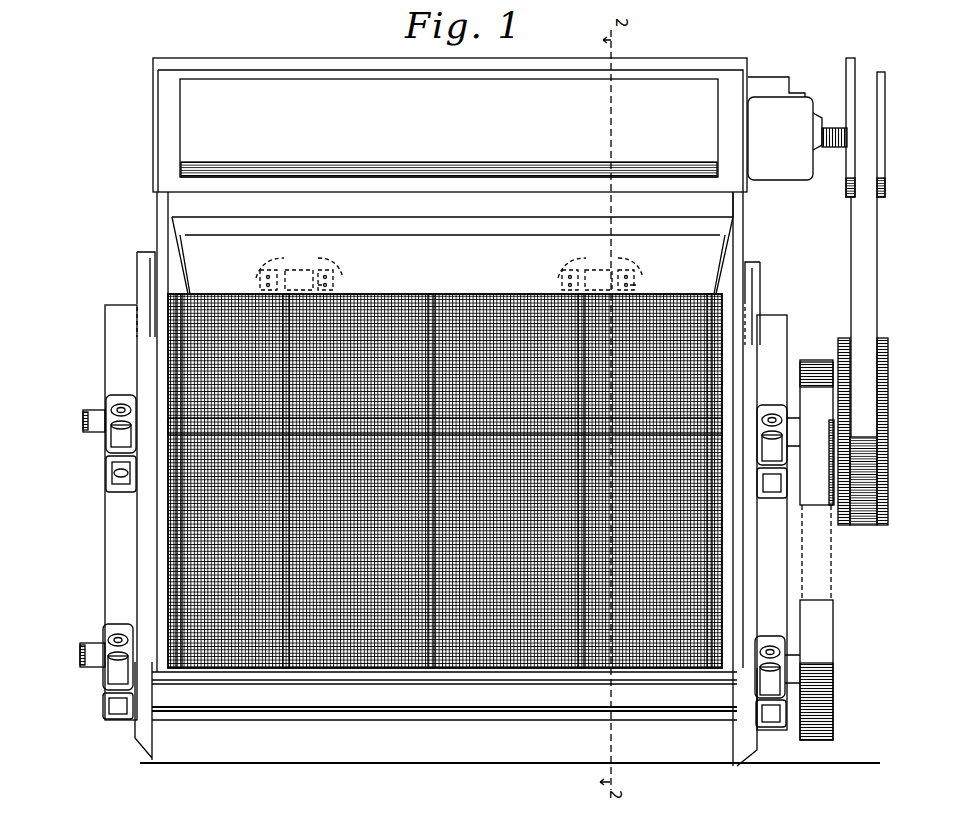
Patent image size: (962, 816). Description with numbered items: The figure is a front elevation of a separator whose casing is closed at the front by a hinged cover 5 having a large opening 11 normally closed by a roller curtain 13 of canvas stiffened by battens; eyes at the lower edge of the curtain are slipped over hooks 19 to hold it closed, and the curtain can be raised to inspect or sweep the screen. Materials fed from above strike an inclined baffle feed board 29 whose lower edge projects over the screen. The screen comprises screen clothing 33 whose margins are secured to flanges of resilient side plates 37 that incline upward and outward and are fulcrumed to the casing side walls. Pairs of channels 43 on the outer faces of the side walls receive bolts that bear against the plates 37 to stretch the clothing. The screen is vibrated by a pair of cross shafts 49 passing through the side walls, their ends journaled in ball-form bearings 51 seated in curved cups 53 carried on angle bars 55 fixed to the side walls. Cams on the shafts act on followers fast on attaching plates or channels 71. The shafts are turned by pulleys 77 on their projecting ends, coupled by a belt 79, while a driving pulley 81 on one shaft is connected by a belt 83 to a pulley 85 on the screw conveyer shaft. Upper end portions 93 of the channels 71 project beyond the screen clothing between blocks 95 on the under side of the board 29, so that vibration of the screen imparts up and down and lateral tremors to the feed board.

The cover 5 is at (191, 58).
The opening 11 is at (449, 128).
The roller curtain 13 is at (268, 172).
The hooks 19 is at (213, 672).
The baffle feed board 29 is at (200, 257).
The screen clothing 33 is at (444, 297).
The side plates 37 is at (192, 299).
The channels 43 is at (148, 286).
The cross shafts 49 is at (175, 396).
The bearings 51 is at (93, 410).
The cups 53 is at (106, 462).
The angle bars 55 is at (105, 537).
The attaching plate 71 is at (372, 300).
The pulleys 77 is at (799, 362).
The belt 79 is at (820, 557).
The driving pulley 81 is at (880, 393).
The belt 83 is at (879, 266).
The pulley 85 is at (883, 141).
The upper end portions 93 is at (336, 286).
The blocks 95 is at (449, 271).